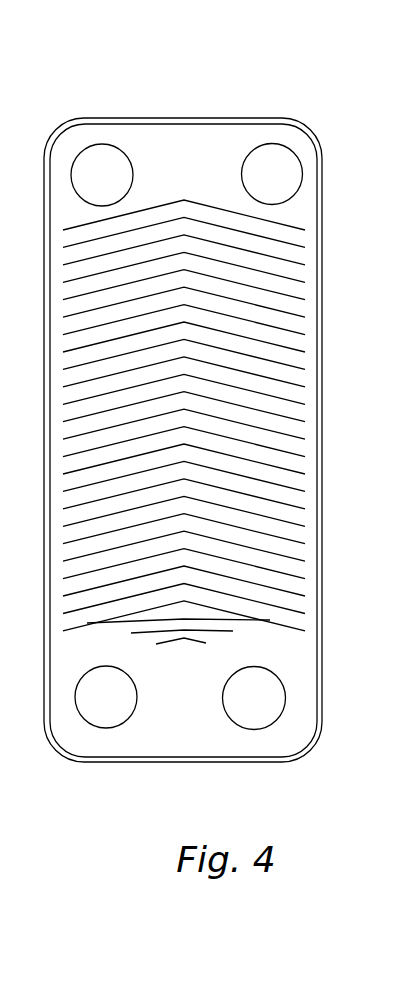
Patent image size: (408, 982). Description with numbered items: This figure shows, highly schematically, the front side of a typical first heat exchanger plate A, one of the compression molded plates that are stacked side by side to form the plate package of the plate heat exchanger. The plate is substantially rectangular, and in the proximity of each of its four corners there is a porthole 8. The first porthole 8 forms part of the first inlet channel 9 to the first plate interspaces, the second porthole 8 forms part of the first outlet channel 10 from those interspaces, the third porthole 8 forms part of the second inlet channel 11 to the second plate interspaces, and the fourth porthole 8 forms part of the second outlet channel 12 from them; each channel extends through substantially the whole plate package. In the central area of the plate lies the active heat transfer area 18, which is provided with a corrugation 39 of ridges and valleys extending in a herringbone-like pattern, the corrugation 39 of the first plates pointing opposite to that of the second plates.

The first heat exchanger plate A is at (180, 117).
The porthole 8 is at (186, 430).
The first inlet channel 9 is at (112, 712).
The first outlet channel 10 is at (115, 163).
The second inlet channel 11 is at (262, 718).
The second outlet channel 12 is at (283, 143).
The active heat transfer area 18 is at (211, 422).
The corrugation 39 is at (278, 466).